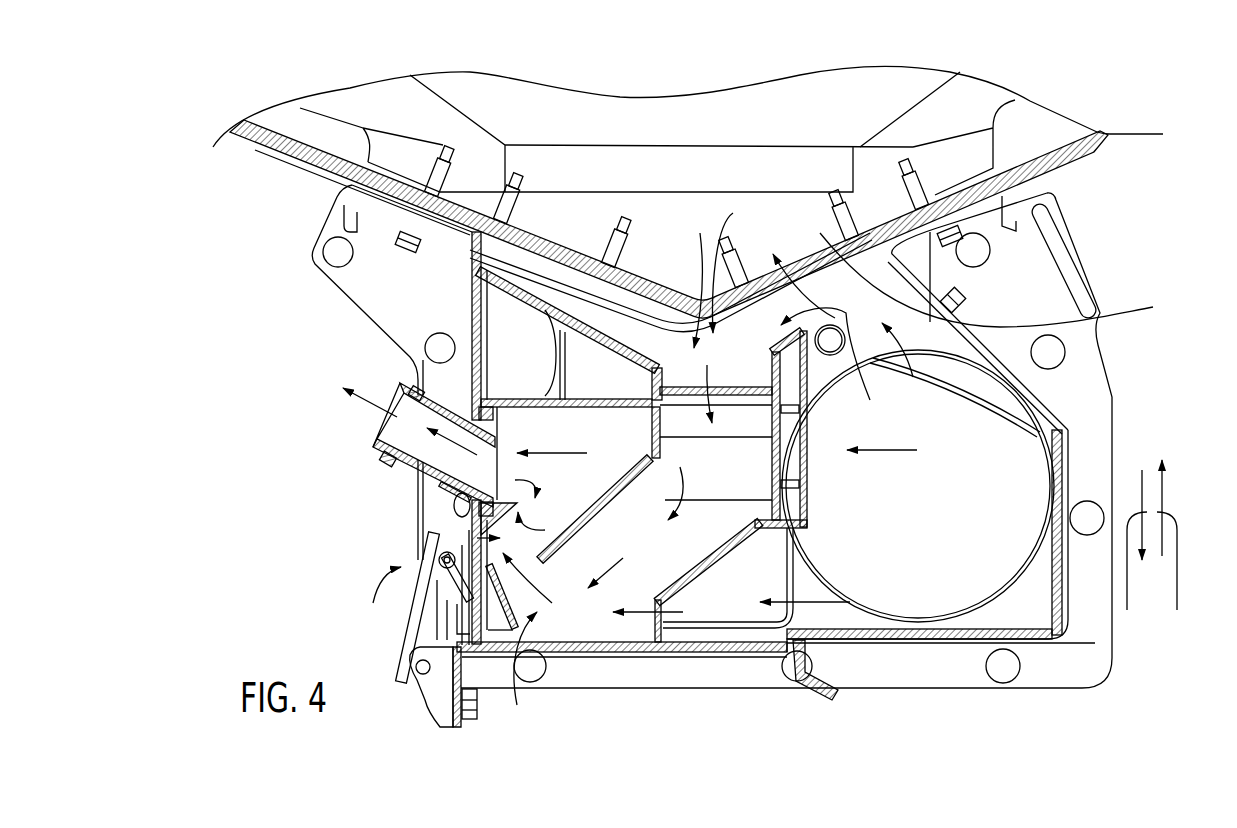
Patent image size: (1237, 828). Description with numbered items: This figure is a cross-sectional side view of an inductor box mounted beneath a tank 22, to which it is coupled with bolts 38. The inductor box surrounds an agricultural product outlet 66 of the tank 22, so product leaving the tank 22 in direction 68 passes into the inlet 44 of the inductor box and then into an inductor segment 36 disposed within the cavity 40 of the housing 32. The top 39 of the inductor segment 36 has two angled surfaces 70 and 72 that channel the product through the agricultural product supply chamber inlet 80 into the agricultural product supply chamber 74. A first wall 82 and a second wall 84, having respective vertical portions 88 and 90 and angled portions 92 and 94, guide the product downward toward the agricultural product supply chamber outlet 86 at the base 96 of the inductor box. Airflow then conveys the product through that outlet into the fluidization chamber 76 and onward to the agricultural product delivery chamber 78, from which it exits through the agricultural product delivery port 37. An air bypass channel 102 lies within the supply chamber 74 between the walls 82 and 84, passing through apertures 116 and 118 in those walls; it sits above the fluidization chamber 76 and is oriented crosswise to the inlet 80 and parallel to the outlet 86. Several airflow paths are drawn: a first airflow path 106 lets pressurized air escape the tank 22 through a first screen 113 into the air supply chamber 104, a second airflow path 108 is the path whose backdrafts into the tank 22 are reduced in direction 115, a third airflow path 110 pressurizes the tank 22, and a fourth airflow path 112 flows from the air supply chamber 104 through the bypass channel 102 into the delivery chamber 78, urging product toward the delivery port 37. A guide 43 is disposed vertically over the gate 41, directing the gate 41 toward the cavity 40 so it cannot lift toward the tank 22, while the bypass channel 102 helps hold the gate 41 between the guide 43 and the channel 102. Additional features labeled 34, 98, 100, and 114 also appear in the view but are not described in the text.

The tank 22 is at (596, 70).
The housing 32 is at (1058, 612).
The bracket 34 is at (1043, 450).
The inductor segment 36 is at (419, 629).
The agricultural product delivery port 37 is at (373, 453).
The bolts 38 is at (430, 182).
The top 39 is at (547, 250).
The cavity 40 is at (774, 265).
The gate 41 is at (706, 384).
The guide 43 is at (670, 365).
The inlet 44 is at (632, 355).
The agricultural product outlet 66 is at (578, 266).
The direction 68 is at (1131, 547).
The surface 70 is at (603, 343).
The surface 72 is at (780, 343).
The agricultural product supply chamber 74 is at (730, 467).
The fluidization chamber 76 is at (479, 513).
The agricultural product delivery chamber 78 is at (507, 437).
The agricultural product supply chamber inlet 80 is at (700, 279).
The first wall 82 is at (717, 653).
The second wall 84 is at (560, 550).
The agricultural product supply chamber outlet 86 is at (524, 672).
The vertical portion 88 is at (772, 385).
The vertical portion 90 is at (650, 384).
The angled portion 92 is at (692, 582).
The angled portion 94 is at (605, 558).
The base 96 is at (491, 636).
The clip 98 is at (438, 486).
The retainer 100 is at (460, 530).
The air bypass channel 102 is at (727, 548).
The air supply chamber 104 is at (911, 542).
The first airflow path 106 is at (788, 414).
The second airflow path 108 is at (820, 602).
The third airflow path 110 is at (812, 297).
The fourth airflow path 112 is at (578, 453).
The first screen 113 is at (1003, 269).
The bracket foot 114 is at (683, 642).
The direction 115 is at (1175, 535).
The aperture 116 is at (807, 473).
The aperture 118 is at (607, 500).